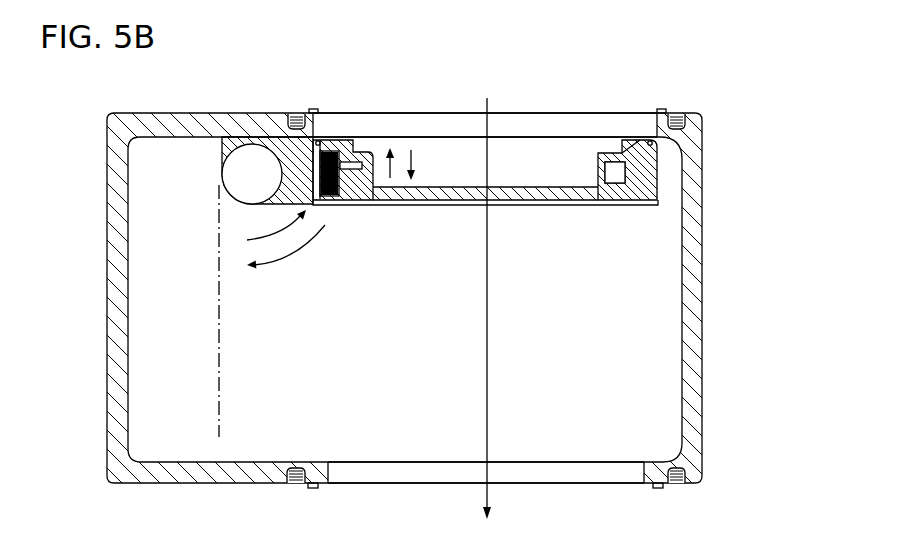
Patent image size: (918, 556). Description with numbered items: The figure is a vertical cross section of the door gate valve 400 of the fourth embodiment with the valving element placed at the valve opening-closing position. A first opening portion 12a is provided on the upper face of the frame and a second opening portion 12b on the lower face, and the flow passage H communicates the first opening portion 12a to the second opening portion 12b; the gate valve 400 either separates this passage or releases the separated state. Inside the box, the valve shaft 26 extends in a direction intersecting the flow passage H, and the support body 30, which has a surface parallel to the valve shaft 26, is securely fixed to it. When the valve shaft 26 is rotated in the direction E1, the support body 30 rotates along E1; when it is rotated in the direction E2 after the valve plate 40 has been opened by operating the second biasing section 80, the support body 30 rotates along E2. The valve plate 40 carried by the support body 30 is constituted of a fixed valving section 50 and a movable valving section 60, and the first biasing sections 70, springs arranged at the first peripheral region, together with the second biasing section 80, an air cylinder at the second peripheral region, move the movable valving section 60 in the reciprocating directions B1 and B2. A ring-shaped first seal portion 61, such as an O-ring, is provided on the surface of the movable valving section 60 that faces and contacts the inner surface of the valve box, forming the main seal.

The gate valve 400 is at (706, 86).
The first opening portion 12a is at (458, 112).
The second opening portion 12b is at (405, 472).
The valve shaft 26 is at (247, 165).
The support body 30 is at (290, 155).
The valve plate 40 is at (565, 56).
The fixed valving section 50 is at (610, 158).
The movable valving section 60 is at (622, 163).
The first seal portion 61 is at (318, 138).
The first biasing section 70 is at (333, 190).
The second biasing section 80 is at (358, 168).
The flow passage H is at (486, 324).
The reciprocating direction B1 is at (381, 148).
The reciprocating direction B2 is at (417, 152).
The rotation direction E1 is at (276, 222).
The rotation direction E2 is at (286, 258).